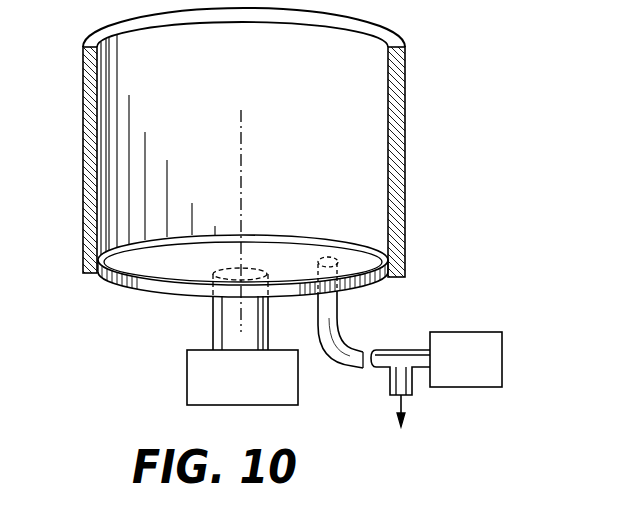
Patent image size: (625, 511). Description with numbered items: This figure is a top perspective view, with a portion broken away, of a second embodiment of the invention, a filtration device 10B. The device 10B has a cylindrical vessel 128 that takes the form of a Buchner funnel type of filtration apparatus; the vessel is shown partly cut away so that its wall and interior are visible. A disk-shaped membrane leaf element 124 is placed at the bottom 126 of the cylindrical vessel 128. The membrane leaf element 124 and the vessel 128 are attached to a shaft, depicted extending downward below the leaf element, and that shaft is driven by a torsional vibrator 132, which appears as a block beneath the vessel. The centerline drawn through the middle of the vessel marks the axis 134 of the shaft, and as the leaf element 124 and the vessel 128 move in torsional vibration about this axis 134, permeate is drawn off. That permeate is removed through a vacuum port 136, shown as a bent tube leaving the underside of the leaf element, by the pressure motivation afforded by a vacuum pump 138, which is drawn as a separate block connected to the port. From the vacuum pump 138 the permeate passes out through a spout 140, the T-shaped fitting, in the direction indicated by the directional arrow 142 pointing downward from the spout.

The device 10B is at (418, 198).
The cylindrical vessel 128 is at (81, 167).
The bottom 126 is at (88, 274).
The membrane leaf element 124 is at (185, 265).
The axis 134 is at (243, 164).
The vacuum pump 138 is at (213, 323).
The torsional vibrator 132 is at (293, 390).
The vacuum port 136 is at (340, 323).
The spout 140 is at (388, 380).
The directional arrow 142 is at (405, 402).